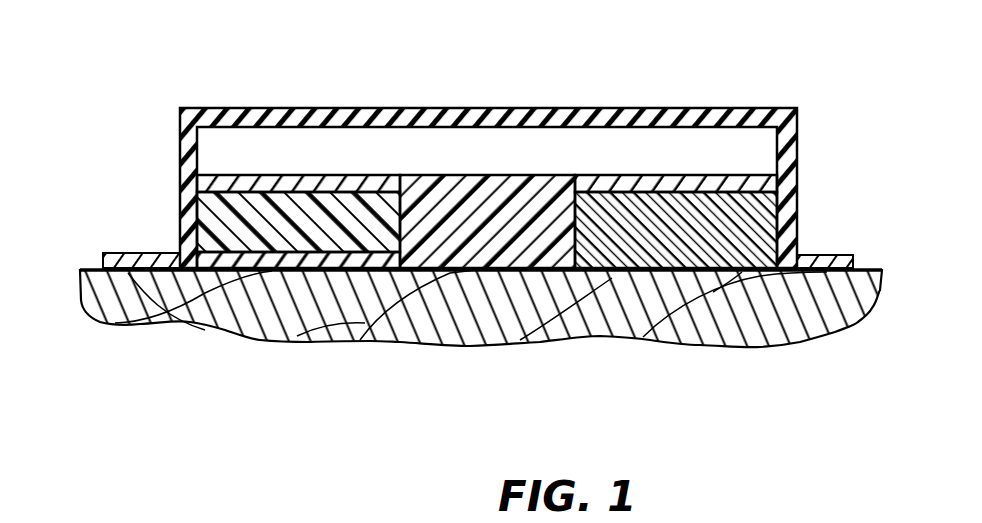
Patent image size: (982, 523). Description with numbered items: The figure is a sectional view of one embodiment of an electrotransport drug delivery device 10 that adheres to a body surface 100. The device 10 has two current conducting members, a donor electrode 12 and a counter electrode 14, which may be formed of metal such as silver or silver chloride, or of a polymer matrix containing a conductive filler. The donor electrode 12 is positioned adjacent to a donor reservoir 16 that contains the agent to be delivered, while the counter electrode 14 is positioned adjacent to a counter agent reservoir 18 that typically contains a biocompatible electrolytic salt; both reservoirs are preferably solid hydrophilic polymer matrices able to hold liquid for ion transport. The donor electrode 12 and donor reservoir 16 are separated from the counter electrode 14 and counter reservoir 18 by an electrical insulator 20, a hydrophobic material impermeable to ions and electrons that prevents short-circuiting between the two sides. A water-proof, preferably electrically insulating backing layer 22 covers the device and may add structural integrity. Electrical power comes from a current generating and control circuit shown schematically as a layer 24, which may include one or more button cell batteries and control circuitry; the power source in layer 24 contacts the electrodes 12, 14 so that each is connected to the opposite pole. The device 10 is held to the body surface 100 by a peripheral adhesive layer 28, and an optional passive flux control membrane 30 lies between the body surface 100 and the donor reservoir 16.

The electrotransport drug delivery device 10 is at (136, 84).
The donor electrode 12 is at (313, 180).
The counter electrode 14 is at (727, 183).
The donor reservoir 16 is at (220, 213).
The counter agent reservoir 18 is at (747, 223).
The electrical insulator 20 is at (507, 188).
The backing layer 22 is at (790, 153).
The current generating and control circuit layer 24 is at (363, 150).
The peripheral adhesive layer 28 is at (100, 290).
The passive flux control membrane 30 is at (285, 262).
The body surface 100 is at (560, 327).